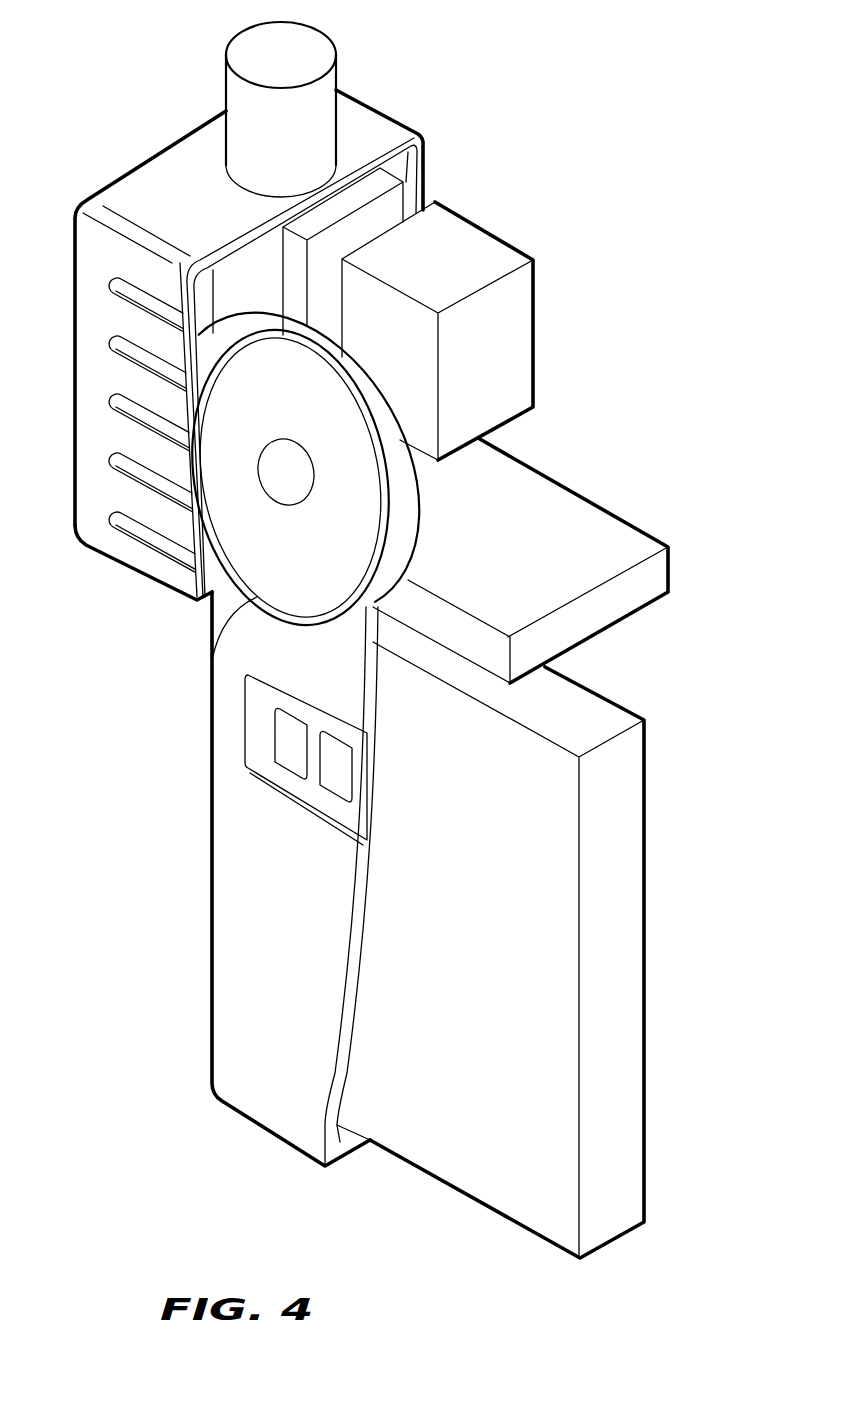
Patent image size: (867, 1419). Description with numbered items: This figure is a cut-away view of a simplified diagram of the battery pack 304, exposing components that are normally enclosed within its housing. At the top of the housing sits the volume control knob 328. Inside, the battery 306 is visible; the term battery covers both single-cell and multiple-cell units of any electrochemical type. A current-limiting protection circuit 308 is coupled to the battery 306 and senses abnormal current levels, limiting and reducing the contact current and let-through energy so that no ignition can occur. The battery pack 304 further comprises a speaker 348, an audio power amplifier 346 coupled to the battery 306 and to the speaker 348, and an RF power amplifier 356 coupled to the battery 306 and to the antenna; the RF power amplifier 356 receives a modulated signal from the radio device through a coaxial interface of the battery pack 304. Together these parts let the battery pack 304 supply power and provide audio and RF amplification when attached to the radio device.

The battery pack 304 is at (261, 920).
The battery 306 is at (524, 950).
The current-limiting protection circuit 308 is at (532, 552).
The volume control knob 328 is at (248, 98).
The audio power amplifier 346 is at (345, 355).
The speaker 348 is at (257, 506).
The RF power amplifier 356 is at (473, 331).